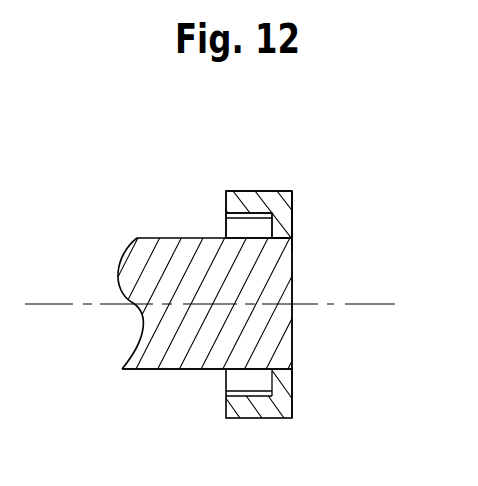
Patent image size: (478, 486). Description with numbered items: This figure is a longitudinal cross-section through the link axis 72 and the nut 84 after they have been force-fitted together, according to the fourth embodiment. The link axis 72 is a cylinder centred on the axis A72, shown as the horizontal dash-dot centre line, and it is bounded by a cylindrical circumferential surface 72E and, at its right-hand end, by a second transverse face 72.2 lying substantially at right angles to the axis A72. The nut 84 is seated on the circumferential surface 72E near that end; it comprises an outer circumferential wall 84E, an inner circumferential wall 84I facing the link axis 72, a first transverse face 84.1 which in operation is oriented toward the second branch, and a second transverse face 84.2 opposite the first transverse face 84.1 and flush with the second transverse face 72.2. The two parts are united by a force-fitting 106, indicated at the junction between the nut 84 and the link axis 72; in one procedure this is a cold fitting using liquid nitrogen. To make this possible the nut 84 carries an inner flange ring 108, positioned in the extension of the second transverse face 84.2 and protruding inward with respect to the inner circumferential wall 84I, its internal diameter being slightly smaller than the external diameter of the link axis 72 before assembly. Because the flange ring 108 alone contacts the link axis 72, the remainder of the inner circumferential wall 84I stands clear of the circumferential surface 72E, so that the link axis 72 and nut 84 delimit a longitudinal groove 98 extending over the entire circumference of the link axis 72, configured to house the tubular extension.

The link axis 72 is at (130, 243).
The axis A72 is at (62, 303).
The cylindrical circumferential surface 72E is at (138, 369).
The second transverse face 72.2 is at (293, 345).
The nut 84 is at (256, 182).
The inner circumferential wall 84I is at (226, 227).
The outer circumferential wall 84E is at (280, 192).
The first transverse face 84.1 is at (226, 191).
The second transverse face 84.2 is at (293, 203).
The longitudinal groove 98 is at (226, 384).
The force-fitting 106 is at (305, 254).
The inner flange ring 108 is at (292, 238).